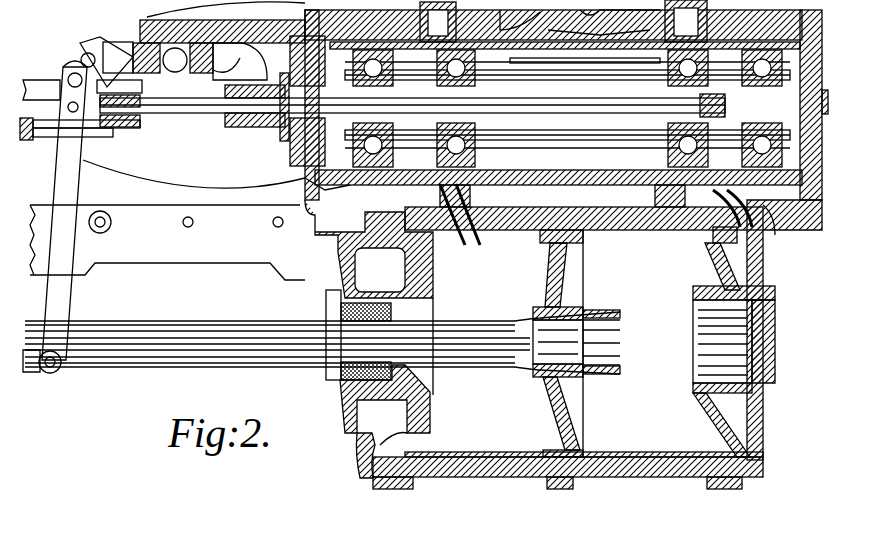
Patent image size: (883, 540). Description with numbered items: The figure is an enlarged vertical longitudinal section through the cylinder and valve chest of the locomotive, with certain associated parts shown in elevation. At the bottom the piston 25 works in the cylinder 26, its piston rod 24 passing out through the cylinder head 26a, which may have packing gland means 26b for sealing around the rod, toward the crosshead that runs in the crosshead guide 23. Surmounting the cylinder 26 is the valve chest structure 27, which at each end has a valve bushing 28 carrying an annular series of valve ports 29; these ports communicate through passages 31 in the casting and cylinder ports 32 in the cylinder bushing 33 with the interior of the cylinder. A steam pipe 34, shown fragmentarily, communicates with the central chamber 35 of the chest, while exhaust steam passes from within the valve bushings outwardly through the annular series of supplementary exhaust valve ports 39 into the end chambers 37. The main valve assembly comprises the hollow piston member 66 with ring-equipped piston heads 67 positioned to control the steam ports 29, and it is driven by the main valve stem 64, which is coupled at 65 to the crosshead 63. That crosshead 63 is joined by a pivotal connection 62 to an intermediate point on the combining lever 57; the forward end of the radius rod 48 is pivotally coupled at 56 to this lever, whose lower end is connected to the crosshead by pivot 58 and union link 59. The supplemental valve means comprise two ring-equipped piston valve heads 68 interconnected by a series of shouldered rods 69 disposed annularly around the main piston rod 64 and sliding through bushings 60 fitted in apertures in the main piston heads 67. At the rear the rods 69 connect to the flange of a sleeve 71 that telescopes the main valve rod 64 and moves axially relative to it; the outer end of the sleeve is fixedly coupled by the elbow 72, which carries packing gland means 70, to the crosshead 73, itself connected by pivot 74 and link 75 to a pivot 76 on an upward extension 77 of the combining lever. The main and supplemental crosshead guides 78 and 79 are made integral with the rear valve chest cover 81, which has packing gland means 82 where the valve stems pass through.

The crosshead guide 23 is at (139, 258).
The piston rod 24 is at (221, 328).
The piston 25 is at (583, 277).
The cylinder 26 is at (638, 480).
The cylinder head 26a is at (360, 450).
The packing gland means 26b is at (345, 393).
The valve chest structure 27 is at (584, 208).
The valve bushing 28 is at (470, 45).
The valve ports 29 is at (470, 196).
The passages 31 is at (596, 220).
The cylinder ports 32 is at (415, 252).
The cylinder bushing 33 is at (624, 240).
The steam pipe 34 is at (575, 36).
The central chamber 35 is at (591, 190).
The end chambers 37 is at (347, 198).
The supplementary exhaust valve ports 39 is at (567, 145).
The radius rod 48 is at (31, 80).
The pivot 56 is at (72, 73).
The combining lever 57 is at (72, 186).
The pivot 58 is at (62, 368).
The union link 59 is at (29, 375).
The bushings 60 is at (507, 152).
The pivotal connection 62 is at (61, 142).
The crosshead 63 is at (110, 107).
The main valve stem 64 is at (194, 115).
The coupling 65 is at (130, 127).
The hollow piston member 66 is at (579, 62).
The piston heads 67 is at (529, 60).
The supplemental piston valve heads 68 is at (300, 185).
The shouldered rods 69 is at (541, 70).
The packing gland means 70 is at (237, 127).
The sleeve 71 is at (291, 142).
The elbow 72 is at (240, 61).
The crosshead 73 is at (195, 75).
The pivot 74 is at (158, 75).
The link 75 is at (115, 48).
The pivot 76 is at (90, 53).
The upward extension 77 is at (119, 80).
The main crosshead guide 78 is at (205, 178).
The supplemental crosshead guide 79 is at (222, 22).
The rear valve chest cover 81 is at (300, 210).
The packing gland means 82 is at (295, 60).